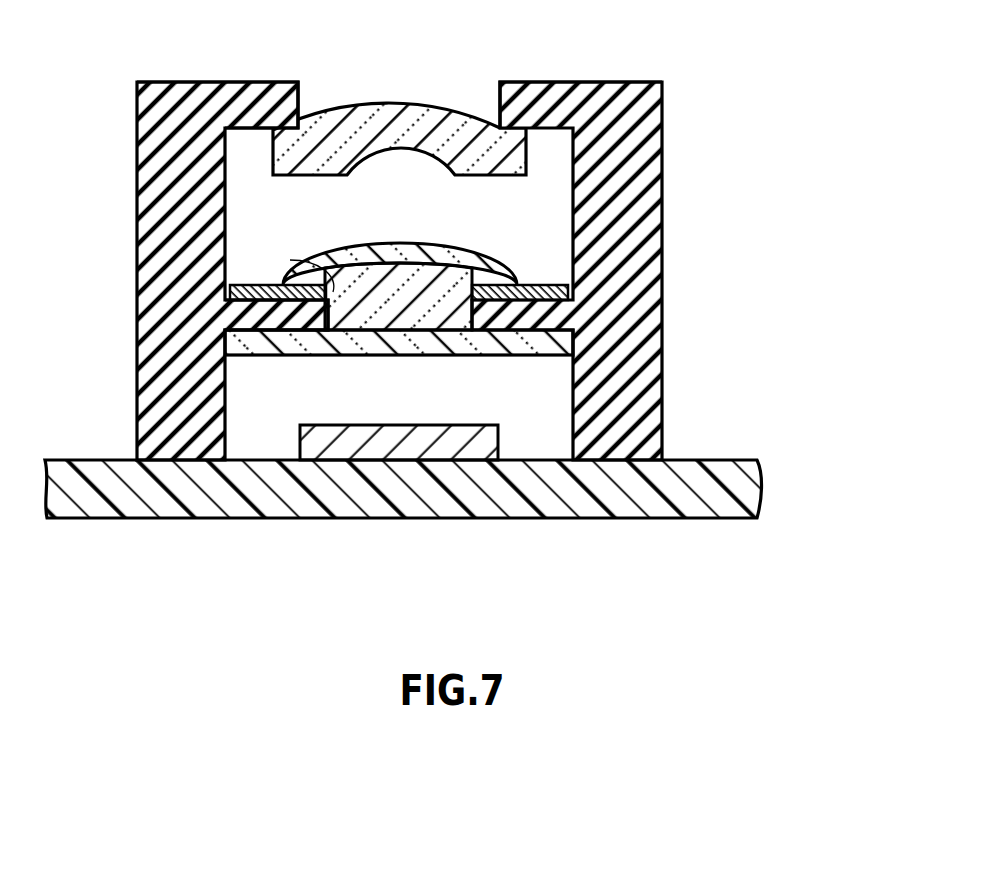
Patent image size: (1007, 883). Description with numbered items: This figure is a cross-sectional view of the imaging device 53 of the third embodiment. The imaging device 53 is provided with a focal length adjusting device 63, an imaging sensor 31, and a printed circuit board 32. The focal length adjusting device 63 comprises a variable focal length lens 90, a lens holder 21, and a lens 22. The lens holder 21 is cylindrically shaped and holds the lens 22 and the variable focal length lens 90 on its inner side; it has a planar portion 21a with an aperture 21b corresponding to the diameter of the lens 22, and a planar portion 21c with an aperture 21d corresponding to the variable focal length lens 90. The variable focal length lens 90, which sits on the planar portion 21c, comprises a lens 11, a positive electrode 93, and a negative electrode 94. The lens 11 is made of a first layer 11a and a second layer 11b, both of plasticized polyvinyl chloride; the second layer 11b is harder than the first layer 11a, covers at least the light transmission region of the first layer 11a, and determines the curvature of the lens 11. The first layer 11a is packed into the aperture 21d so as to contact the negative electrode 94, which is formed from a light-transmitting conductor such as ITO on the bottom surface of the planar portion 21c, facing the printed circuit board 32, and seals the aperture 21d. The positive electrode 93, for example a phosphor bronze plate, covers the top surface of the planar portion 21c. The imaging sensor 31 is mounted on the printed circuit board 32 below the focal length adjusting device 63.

The imaging device 53 is at (494, 294).
The focal length adjusting device 63 is at (466, 240).
The variable focal length lens 90 is at (525, 247).
The lens 11 is at (530, 229).
The first layer 11a is at (500, 260).
The second layer 11b is at (452, 248).
The lens holder 21 is at (163, 138).
The planar portion 21a is at (260, 88).
The aperture 21b is at (502, 110).
The planar portion 21c is at (250, 322).
The aperture 21d is at (290, 260).
The lens 22 is at (380, 118).
The positive electrode 93 is at (530, 288).
The negative electrode 94 is at (490, 345).
The imaging sensor 31 is at (343, 447).
The printed circuit board 32 is at (168, 503).